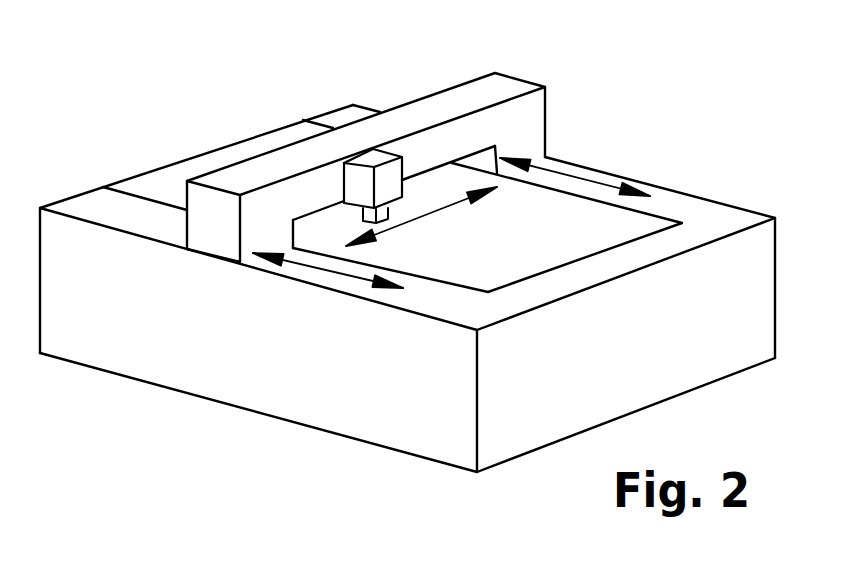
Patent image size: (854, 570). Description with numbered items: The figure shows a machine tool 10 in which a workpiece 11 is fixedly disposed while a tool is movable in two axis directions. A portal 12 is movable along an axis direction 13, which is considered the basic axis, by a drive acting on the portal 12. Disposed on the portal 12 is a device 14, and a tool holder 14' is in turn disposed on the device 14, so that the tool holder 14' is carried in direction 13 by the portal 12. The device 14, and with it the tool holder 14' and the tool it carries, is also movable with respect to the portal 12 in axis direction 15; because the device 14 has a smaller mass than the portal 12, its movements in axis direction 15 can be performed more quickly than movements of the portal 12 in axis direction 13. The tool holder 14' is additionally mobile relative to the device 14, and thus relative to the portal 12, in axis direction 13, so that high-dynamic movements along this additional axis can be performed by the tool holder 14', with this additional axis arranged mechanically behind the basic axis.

The machine tool 10 is at (237, 382).
The workpiece 11 is at (488, 263).
The portal 12 is at (236, 178).
The axis direction 13 is at (358, 276).
The device 14 is at (378, 133).
The tool holder 14' is at (310, 258).
The axis direction 15 is at (421, 217).